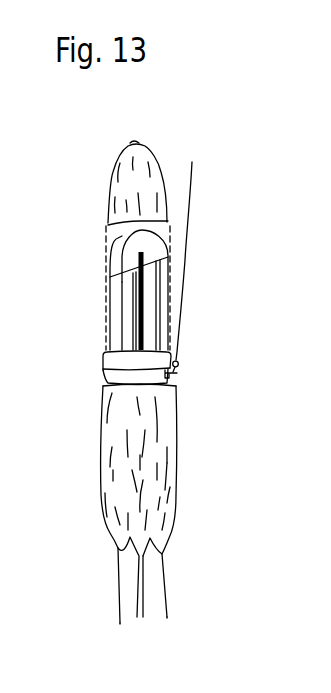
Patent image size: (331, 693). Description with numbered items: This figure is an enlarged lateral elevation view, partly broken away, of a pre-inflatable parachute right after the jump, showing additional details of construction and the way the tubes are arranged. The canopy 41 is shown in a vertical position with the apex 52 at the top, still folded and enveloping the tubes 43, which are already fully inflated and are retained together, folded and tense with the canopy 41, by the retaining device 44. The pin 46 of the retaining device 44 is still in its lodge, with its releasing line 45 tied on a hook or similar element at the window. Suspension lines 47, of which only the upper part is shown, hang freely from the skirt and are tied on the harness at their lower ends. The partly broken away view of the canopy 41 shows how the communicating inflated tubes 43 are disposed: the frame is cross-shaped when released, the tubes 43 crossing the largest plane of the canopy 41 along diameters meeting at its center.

The canopy 41 is at (113, 180).
The tubes 43 is at (115, 302).
The retaining device 44 is at (107, 380).
The releasing line 45 is at (187, 242).
The pin 46 is at (177, 373).
The suspension lines 47 is at (168, 575).
The apex 52 is at (140, 138).